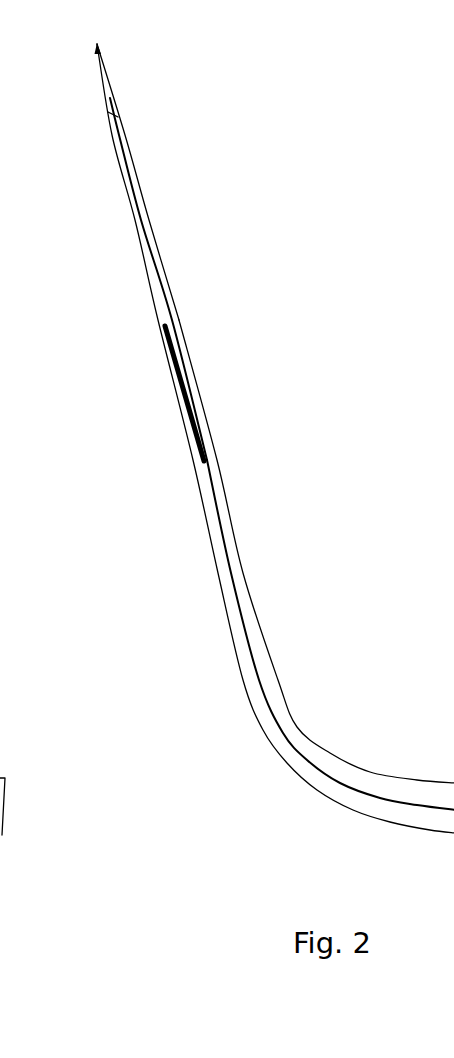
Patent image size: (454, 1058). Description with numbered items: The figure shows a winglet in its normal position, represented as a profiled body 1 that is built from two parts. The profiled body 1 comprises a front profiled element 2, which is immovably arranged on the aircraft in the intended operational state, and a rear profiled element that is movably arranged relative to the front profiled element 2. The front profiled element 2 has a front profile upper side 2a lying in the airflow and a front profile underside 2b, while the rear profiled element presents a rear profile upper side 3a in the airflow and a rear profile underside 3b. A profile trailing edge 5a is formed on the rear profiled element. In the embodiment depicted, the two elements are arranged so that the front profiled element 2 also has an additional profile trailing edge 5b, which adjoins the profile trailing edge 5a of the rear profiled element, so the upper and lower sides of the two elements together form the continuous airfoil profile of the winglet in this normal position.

The profiled body 1 is at (318, 358).
The front profiled element 2 is at (291, 648).
The front profile upper side 2a is at (242, 563).
The front profile underside 2b is at (217, 573).
The rear profile upper side 3a is at (163, 267).
The rear profile underside 3b is at (158, 332).
The profile trailing edge 5a is at (144, 246).
The additional profile trailing edge 5b is at (305, 755).